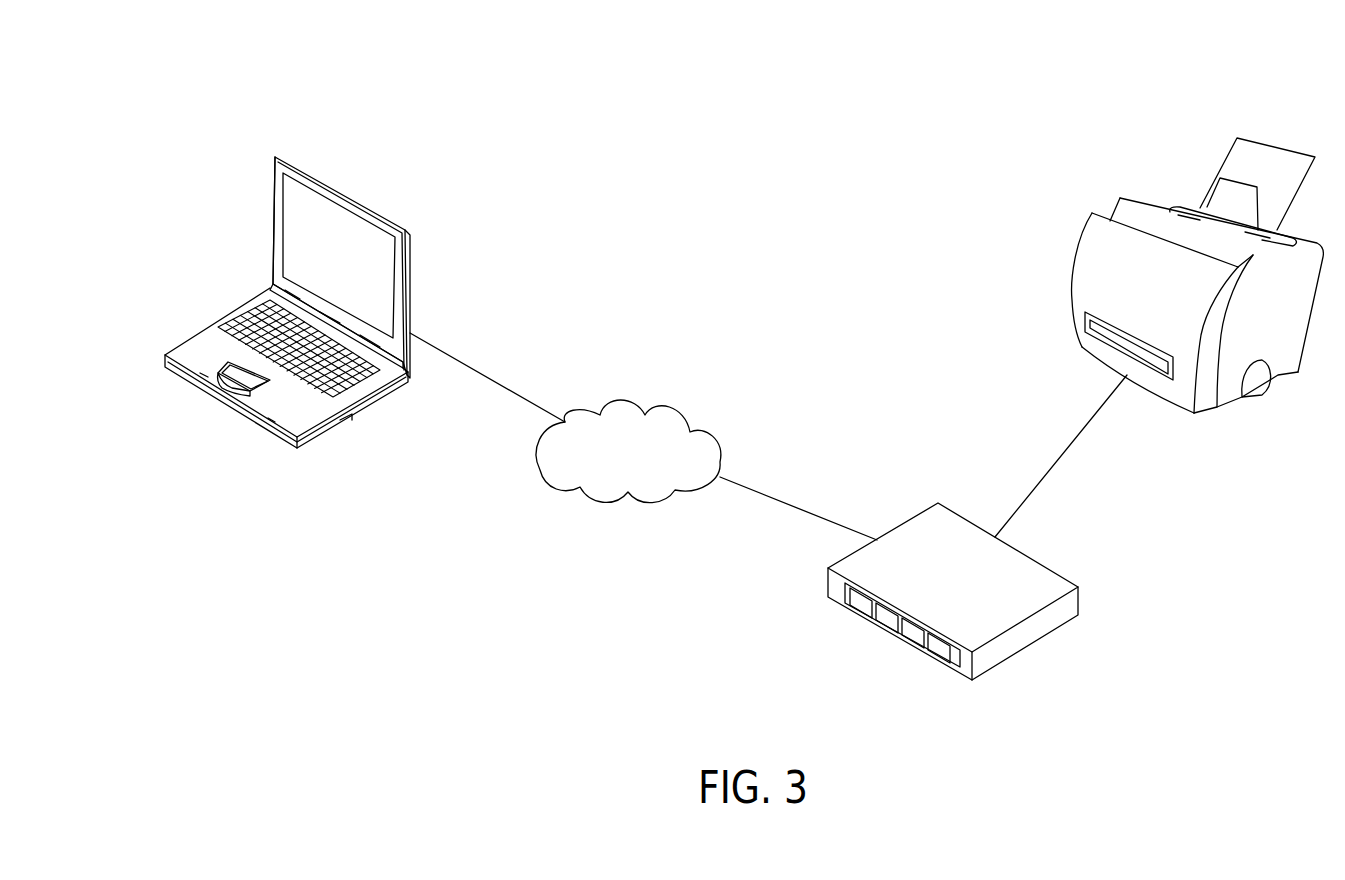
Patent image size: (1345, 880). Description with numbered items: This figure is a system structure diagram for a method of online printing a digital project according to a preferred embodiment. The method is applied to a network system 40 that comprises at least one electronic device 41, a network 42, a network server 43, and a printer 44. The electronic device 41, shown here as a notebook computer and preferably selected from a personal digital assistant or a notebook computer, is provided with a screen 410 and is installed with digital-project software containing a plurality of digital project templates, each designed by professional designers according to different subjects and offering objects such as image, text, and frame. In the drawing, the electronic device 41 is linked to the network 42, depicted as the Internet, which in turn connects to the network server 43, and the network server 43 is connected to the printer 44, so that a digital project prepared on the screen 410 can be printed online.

The network system 40 is at (742, 112).
The electronic device 41 is at (385, 223).
The screen 410 is at (293, 215).
The network 42 is at (652, 407).
The network server 43 is at (955, 532).
The printer 44 is at (1090, 258).